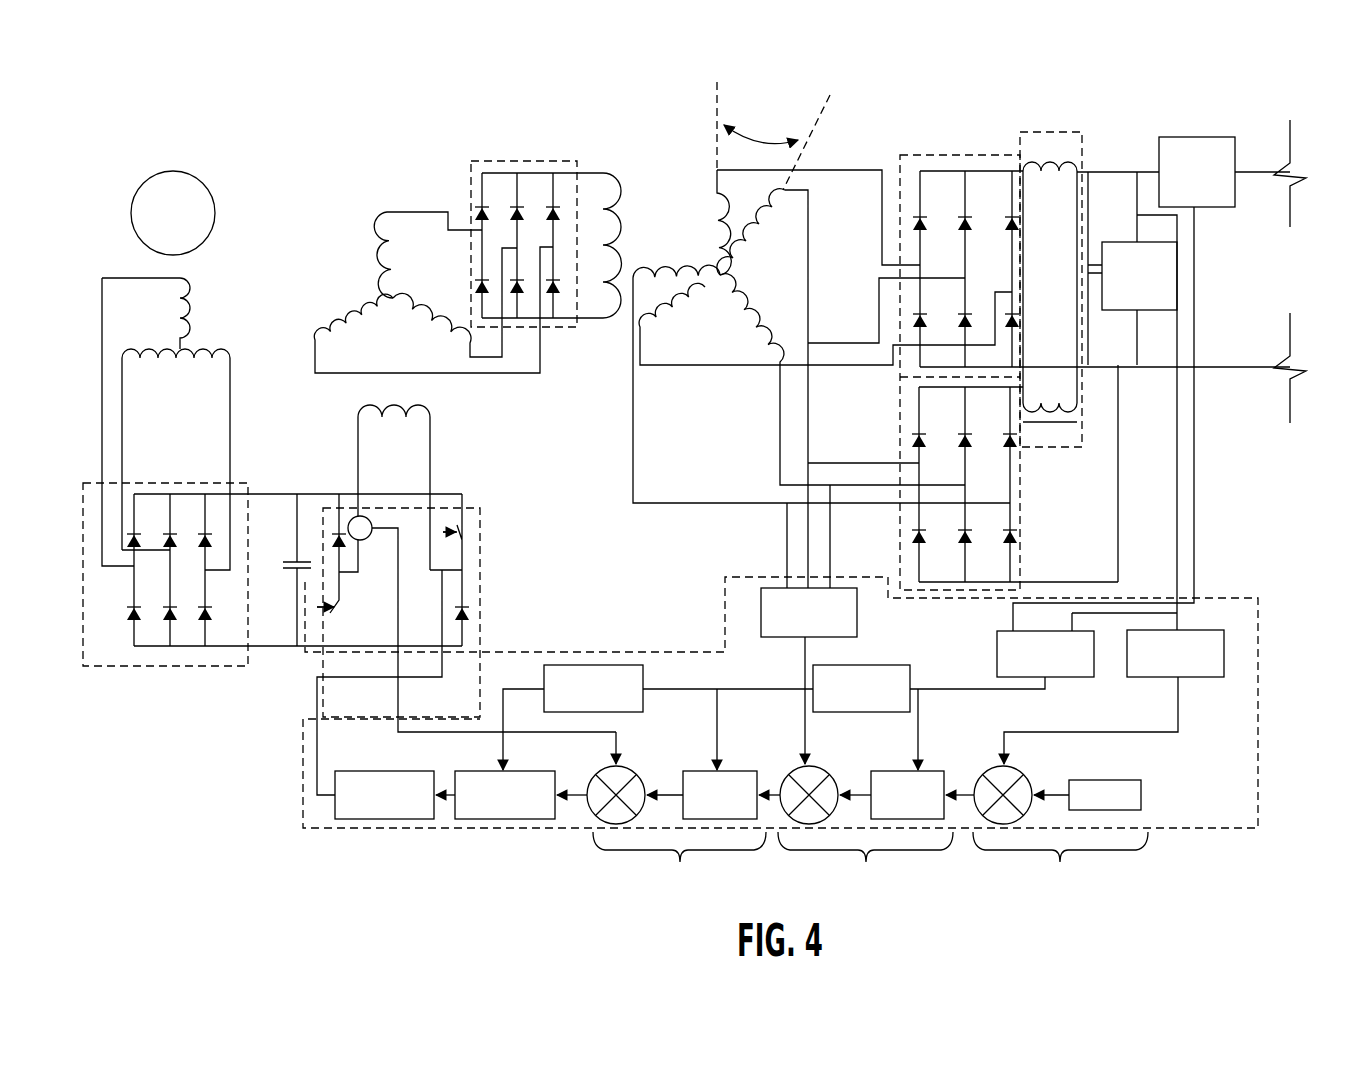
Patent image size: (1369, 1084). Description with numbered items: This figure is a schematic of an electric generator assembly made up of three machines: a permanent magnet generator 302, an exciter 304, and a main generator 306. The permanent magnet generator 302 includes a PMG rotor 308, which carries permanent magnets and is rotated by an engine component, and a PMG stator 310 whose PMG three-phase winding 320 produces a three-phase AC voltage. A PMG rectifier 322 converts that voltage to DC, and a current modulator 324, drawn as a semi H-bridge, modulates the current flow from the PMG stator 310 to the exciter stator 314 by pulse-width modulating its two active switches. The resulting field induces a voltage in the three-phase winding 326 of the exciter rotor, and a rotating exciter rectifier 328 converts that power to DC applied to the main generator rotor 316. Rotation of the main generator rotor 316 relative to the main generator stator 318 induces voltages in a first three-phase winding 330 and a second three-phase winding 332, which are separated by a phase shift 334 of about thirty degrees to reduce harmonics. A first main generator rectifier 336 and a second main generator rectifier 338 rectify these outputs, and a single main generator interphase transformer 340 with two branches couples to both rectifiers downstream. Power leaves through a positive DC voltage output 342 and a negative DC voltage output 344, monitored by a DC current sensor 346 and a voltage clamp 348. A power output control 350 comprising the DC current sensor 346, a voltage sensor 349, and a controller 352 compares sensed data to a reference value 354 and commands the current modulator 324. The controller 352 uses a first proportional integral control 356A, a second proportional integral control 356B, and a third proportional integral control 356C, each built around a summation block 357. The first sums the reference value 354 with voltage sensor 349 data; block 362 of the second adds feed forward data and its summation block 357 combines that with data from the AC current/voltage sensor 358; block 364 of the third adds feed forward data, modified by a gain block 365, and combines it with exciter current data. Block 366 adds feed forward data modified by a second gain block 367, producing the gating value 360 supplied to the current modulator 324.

The permanent magnet generator 302 is at (96, 230).
The exciter 304 is at (523, 420).
The main generator 306 is at (635, 142).
The PMG rotor 308 is at (156, 226).
The PMG stator 310 is at (126, 329).
The exciter stator 314 is at (341, 459).
The main generator rotor 316 is at (586, 161).
The main generator stator 318 is at (702, 190).
The PMG three-phase winding 320 is at (204, 338).
The PMG rectifier 322 is at (160, 668).
The current modulator 324 is at (482, 525).
The three-phase winding 326 is at (329, 258).
The exciter rectifier 328 is at (495, 158).
The first three-phase winding 330 is at (718, 230).
The second three-phase winding 332 is at (693, 292).
The phase shift 334 is at (770, 125).
The first main generator rectifier 336 is at (905, 153).
The second main generator rectifier 338 is at (1022, 510).
The main generator interphase transformer 340 is at (1050, 132).
The positive DC voltage output 342 is at (1243, 174).
The negative DC voltage output 344 is at (1240, 367).
The DC current sensor 346 is at (1180, 185).
The voltage clamp 348 is at (1122, 289).
The voltage sensor 349 is at (1159, 666).
The power output control 350 is at (1303, 586).
The controller 352 is at (1258, 719).
The reference value 354 is at (1125, 812).
The first proportional integral control 356A is at (1060, 862).
The second proportional integral control 356B is at (866, 862).
The third proportional integral control 356C is at (680, 862).
The summation block 357 is at (1025, 816).
The current/voltage sensor 358 is at (792, 625).
The gating value 360 is at (368, 808).
The block 362 is at (890, 808).
The block 364 is at (703, 808).
The gain block 365 is at (845, 702).
The block 366 is at (488, 808).
The second gain block 367 is at (577, 702).